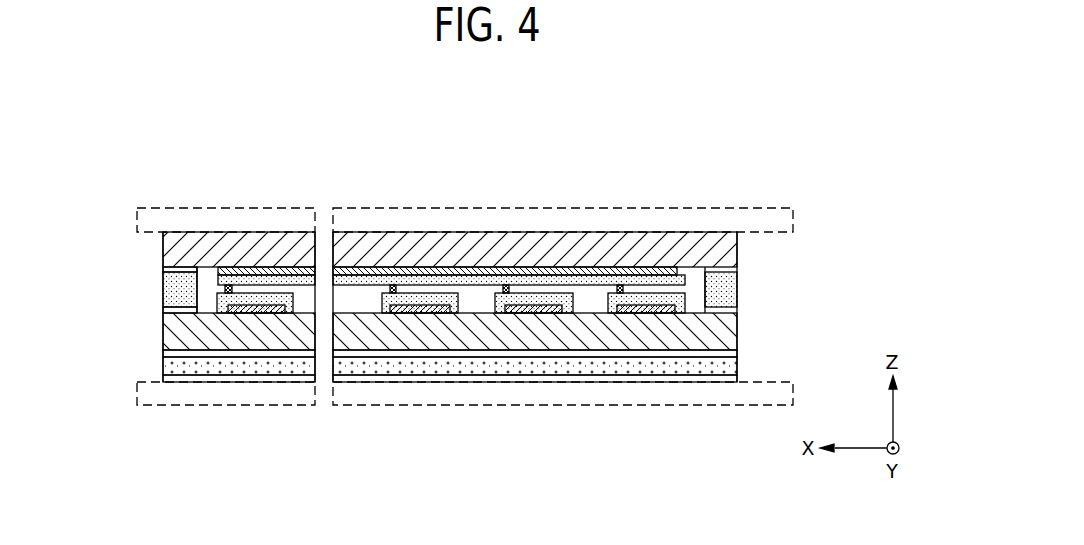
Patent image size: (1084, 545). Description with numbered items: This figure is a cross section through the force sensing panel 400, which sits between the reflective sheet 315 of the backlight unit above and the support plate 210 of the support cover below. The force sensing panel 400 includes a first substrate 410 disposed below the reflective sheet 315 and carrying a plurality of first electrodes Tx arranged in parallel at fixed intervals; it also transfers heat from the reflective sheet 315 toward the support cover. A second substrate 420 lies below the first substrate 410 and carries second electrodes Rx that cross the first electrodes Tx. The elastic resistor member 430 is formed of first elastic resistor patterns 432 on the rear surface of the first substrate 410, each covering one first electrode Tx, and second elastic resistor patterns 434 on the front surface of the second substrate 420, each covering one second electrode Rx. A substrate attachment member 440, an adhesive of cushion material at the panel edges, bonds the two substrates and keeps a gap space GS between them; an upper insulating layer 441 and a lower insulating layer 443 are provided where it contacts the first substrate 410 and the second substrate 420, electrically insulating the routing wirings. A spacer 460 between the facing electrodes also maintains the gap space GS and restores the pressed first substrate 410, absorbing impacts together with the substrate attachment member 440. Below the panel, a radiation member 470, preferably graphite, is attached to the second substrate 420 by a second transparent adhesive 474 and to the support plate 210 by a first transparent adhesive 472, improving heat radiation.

The reflective sheet 315 is at (793, 210).
The support plate 210 is at (167, 407).
The force sensing panel 400 is at (843, 248).
The first substrate 410 is at (730, 252).
The substrate attachment member 440 is at (730, 283).
The upper insulating layer 441 is at (165, 268).
The lower insulating layer 443 is at (165, 307).
The elastic resistor member 430 is at (451, 207).
The first elastic resistor patterns 432 is at (296, 283).
The second elastic resistor patterns 434 is at (245, 298).
The spacer 460 is at (620, 290).
The second substrate 420 is at (730, 333).
The second transparent adhesive 474 is at (165, 350).
The radiation member 470 is at (730, 365).
The first transparent adhesive 472 is at (165, 378).
The gap space GS is at (422, 290).
The first electrodes Tx is at (525, 272).
The second electrodes Rx is at (537, 313).